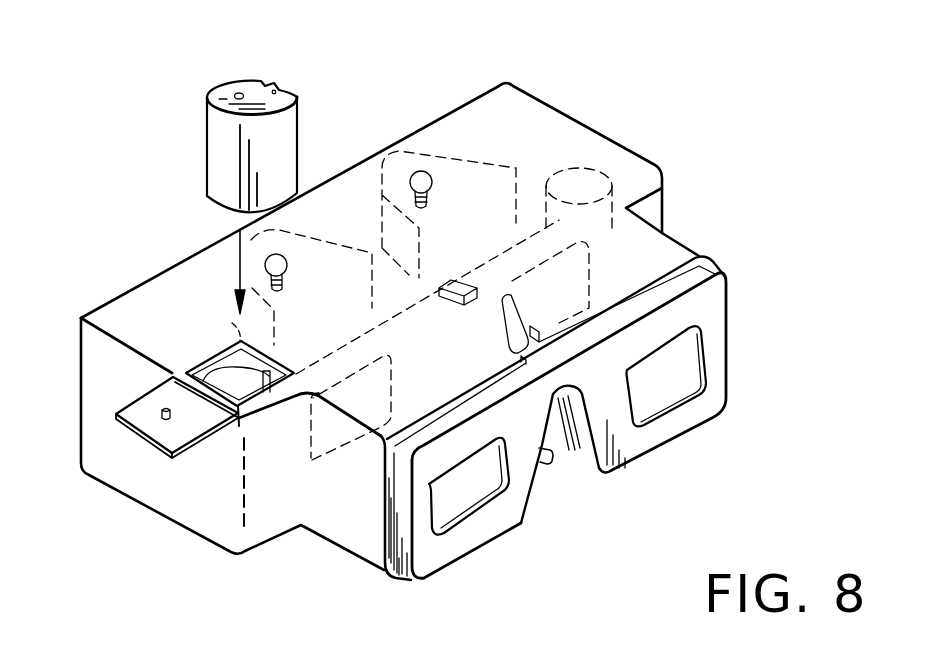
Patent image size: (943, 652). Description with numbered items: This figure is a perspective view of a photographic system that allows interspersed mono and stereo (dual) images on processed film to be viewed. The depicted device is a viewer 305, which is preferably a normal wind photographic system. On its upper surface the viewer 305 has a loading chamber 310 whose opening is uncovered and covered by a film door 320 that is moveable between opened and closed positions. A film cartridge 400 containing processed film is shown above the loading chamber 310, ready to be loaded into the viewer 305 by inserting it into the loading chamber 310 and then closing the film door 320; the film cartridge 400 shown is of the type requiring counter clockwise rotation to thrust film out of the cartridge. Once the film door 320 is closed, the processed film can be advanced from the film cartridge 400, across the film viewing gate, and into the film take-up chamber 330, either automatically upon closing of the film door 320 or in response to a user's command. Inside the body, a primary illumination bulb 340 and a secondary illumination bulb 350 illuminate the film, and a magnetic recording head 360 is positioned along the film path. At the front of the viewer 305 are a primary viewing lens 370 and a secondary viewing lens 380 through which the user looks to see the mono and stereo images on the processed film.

The viewer 305 is at (403, 331).
The loading chamber 310 is at (234, 391).
The film door 320 is at (157, 452).
The film take-up chamber 330 is at (584, 186).
The primary illumination bulb 340 is at (417, 170).
The secondary illumination bulb 350 is at (290, 264).
The magnetic recording head 360 is at (467, 307).
The primary viewing lens 370 is at (467, 508).
The secondary viewing lens 380 is at (662, 402).
The film cartridge 400 is at (231, 82).